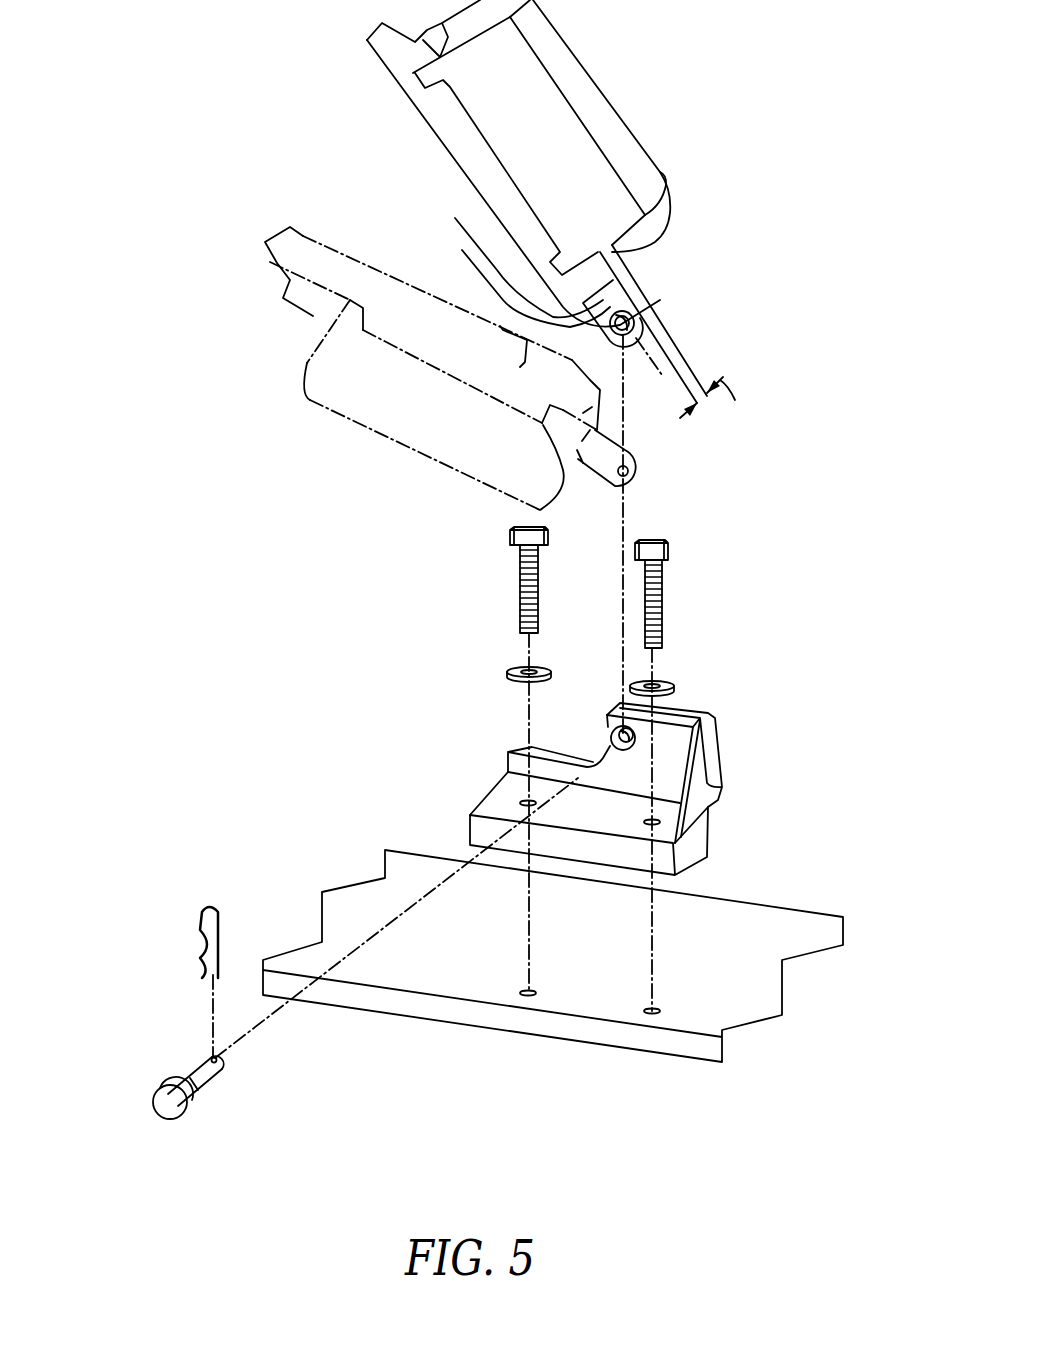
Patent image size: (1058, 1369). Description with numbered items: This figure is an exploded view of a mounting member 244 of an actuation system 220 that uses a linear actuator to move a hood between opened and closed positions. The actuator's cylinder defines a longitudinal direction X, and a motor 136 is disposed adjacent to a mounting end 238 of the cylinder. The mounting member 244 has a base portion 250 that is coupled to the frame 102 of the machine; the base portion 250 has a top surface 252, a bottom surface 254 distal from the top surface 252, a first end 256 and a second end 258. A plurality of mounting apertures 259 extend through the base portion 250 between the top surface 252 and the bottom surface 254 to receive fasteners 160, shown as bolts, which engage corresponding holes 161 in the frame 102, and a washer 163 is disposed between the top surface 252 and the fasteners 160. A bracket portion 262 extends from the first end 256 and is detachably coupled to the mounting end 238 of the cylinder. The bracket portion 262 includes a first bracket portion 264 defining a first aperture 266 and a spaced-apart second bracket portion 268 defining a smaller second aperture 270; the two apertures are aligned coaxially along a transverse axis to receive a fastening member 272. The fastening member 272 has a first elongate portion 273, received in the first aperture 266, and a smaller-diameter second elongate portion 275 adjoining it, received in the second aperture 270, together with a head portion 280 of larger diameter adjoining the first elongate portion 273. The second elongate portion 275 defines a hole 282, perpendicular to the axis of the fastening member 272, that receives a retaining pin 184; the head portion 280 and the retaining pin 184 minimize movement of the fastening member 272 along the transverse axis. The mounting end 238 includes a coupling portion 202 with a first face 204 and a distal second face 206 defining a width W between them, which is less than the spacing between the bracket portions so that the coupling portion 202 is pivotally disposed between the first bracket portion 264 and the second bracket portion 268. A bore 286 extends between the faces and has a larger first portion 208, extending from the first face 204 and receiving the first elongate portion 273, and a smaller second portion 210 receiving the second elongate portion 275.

The frame 102 is at (405, 850).
The motor 136 is at (633, 130).
The fasteners 160 is at (670, 547).
The holes 161 is at (653, 1015).
The washer 163 is at (690, 705).
The retaining pin 184 is at (197, 917).
The coupling portion 202 is at (651, 307).
The first face 204 is at (537, 283).
The second face 206 is at (628, 290).
The first portion 208 is at (583, 326).
The second portion 210 is at (627, 477).
The actuation system 220 is at (381, 179).
The mounting end 238 is at (728, 168).
The mounting member 244 is at (750, 718).
The base portion 250 is at (507, 816).
The top surface 252 is at (470, 815).
The bottom surface 254 is at (690, 868).
The first end 256 is at (730, 783).
The second end 258 is at (507, 748).
The mounting apertures 259 is at (660, 822).
The bracket portion 262 is at (737, 750).
The first bracket portion 264 is at (712, 715).
The first aperture 266 is at (612, 735).
The second bracket portion 268 is at (710, 717).
The second aperture 270 is at (620, 730).
The fastening member 272 is at (167, 1123).
The first elongate portion 273 is at (188, 1078).
The second elongate portion 275 is at (217, 1075).
The head portion 280 is at (160, 1103).
The hole 282 is at (207, 1057).
The bore 286 is at (632, 311).
The width W is at (712, 402).
The longitudinal direction X is at (657, 380).